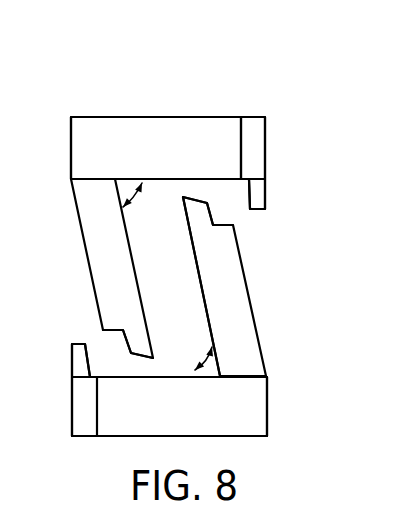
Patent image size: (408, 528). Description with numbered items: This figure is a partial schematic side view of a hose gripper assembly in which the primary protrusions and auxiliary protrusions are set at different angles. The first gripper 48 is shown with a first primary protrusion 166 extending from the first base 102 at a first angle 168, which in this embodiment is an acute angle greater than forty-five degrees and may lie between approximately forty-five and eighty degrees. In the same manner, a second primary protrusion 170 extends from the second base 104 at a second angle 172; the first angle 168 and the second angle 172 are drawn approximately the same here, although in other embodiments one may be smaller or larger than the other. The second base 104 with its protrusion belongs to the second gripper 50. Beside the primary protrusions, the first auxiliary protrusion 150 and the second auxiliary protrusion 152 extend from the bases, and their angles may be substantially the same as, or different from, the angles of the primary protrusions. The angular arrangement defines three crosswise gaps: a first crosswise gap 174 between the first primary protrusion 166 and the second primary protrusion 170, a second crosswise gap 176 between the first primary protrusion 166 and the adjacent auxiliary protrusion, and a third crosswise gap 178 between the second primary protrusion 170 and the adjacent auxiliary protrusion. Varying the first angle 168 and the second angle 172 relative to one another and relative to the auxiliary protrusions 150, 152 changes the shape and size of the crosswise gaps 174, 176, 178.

The first gripper 48 is at (203, 72).
The second gripper 50 is at (85, 450).
The first base 102 is at (123, 125).
The second base 104 is at (240, 430).
The first auxiliary protrusion 150 is at (259, 201).
The second auxiliary protrusion 152 is at (78, 360).
The first primary protrusion 166 is at (97, 247).
The first angle 168 is at (134, 186).
The second primary protrusion 170 is at (232, 293).
The second angle 172 is at (218, 372).
The first crosswise gap 174 is at (188, 340).
The second crosswise gap 176 is at (103, 352).
The third crosswise gap 178 is at (227, 200).